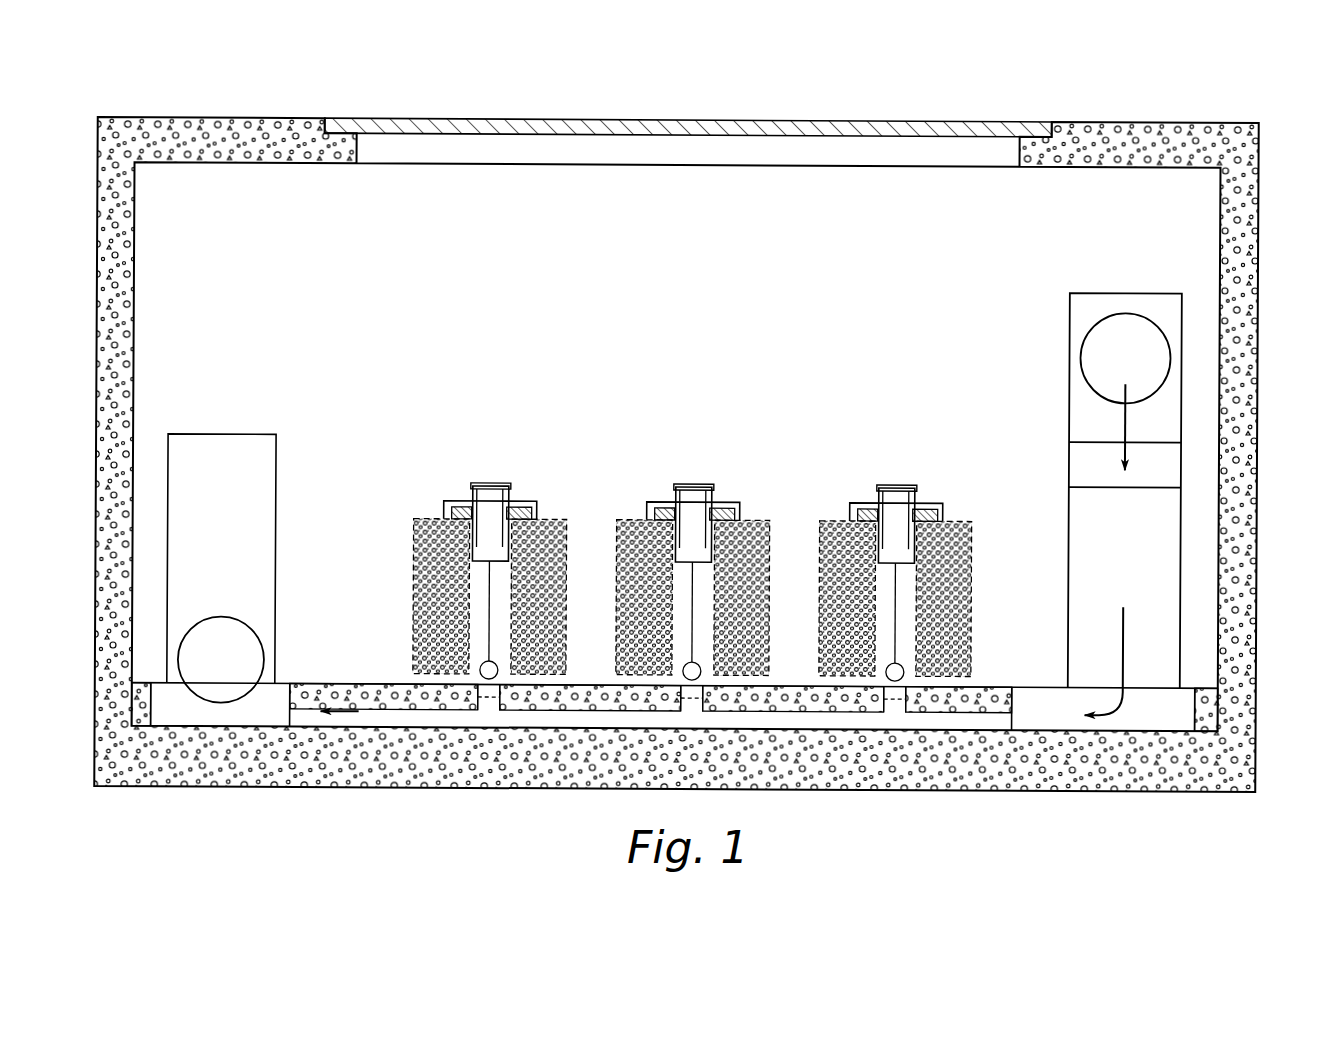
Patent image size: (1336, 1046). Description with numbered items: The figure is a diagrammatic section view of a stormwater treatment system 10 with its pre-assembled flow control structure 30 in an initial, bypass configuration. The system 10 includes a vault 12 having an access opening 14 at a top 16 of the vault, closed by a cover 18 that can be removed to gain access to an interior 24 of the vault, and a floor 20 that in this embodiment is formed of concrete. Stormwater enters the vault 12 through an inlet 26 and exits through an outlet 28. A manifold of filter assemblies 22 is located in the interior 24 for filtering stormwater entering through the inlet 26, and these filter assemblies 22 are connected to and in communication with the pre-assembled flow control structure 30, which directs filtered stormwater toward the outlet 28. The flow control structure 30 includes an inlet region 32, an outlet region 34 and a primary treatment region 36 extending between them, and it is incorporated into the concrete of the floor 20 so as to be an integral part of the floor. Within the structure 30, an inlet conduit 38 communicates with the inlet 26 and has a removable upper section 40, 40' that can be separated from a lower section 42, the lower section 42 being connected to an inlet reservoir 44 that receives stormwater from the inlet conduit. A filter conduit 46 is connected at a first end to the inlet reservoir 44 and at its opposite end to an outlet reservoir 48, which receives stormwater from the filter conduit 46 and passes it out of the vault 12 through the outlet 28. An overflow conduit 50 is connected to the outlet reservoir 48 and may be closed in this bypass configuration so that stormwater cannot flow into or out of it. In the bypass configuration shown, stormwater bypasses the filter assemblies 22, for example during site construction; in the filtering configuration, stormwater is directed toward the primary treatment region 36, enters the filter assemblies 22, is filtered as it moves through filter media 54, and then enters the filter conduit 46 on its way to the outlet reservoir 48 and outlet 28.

The stormwater treatment system 10 is at (1106, 98).
The vault 12 is at (1260, 229).
The access opening 14 is at (356, 148).
The top 16 is at (250, 118).
The cover 18 is at (877, 120).
The floor 20 is at (991, 686).
The filter assemblies 22 is at (551, 519).
The interior 24 is at (648, 248).
The inlet 26 is at (1100, 338).
The outlet 28 is at (215, 652).
The pre-assembled flow control structure 30 is at (1043, 686).
The inlet region 32 is at (1031, 568).
The outlet region 34 is at (332, 602).
The primary treatment region 36 is at (815, 418).
The inlet conduit 38 is at (1150, 545).
The removable upper section 40 is at (1192, 459).
The removable upper section 40' is at (1195, 368).
The lower section 42 is at (1170, 622).
The inlet reservoir 44 is at (1050, 720).
The filter conduit 46 is at (578, 716).
The outlet reservoir 48 is at (270, 709).
The overflow conduit 50 is at (230, 453).
The filter media 54 is at (745, 566).